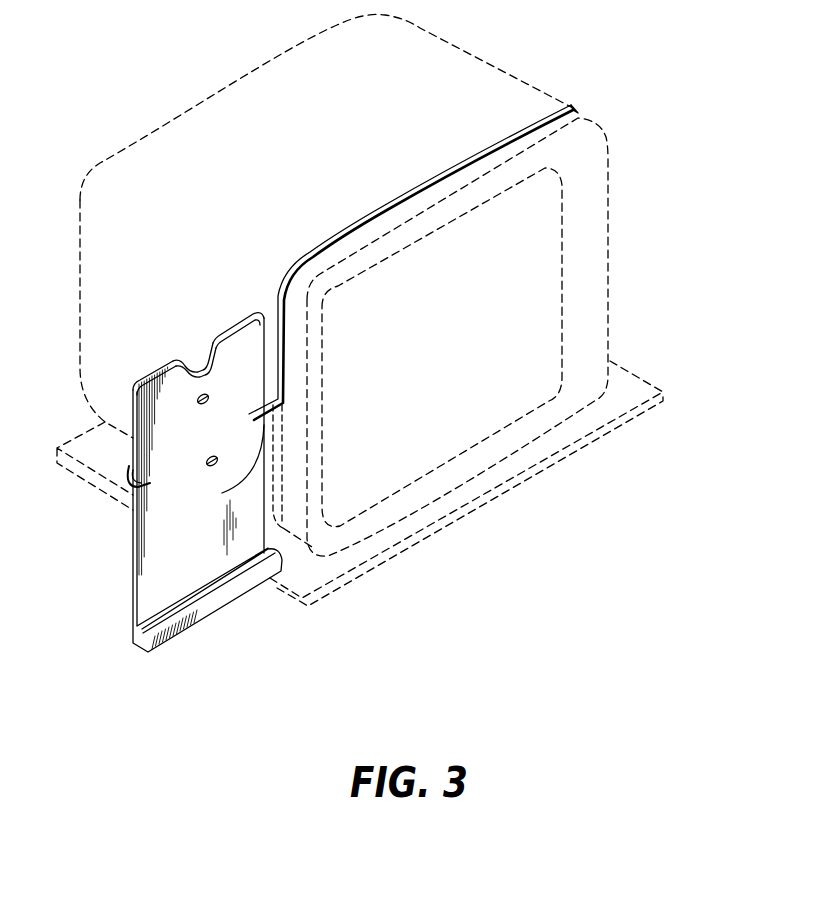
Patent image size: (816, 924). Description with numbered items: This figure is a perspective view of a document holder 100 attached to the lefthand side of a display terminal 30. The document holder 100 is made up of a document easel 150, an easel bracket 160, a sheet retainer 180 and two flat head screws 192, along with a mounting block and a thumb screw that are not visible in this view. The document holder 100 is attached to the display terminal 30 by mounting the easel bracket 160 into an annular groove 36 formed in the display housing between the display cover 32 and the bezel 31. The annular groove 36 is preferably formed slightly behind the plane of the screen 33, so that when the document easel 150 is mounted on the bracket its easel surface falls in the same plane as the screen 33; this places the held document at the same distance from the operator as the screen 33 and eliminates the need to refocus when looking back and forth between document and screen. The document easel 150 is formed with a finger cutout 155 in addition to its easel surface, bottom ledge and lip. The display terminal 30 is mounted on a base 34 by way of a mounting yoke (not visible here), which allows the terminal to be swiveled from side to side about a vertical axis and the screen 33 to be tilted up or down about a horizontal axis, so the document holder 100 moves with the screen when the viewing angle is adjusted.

The display terminal 30 is at (609, 239).
The bezel 31 is at (580, 121).
The display cover 32 is at (490, 62).
The screen 33 is at (540, 298).
The base 34 is at (640, 385).
The annular groove 36 is at (283, 507).
The document holder 100 is at (134, 379).
The document easel 150 is at (156, 576).
The finger cutout 155 is at (197, 356).
The easel bracket 160 is at (384, 213).
The sheet retainer 180 is at (150, 491).
The flat head screws 192 is at (211, 456).